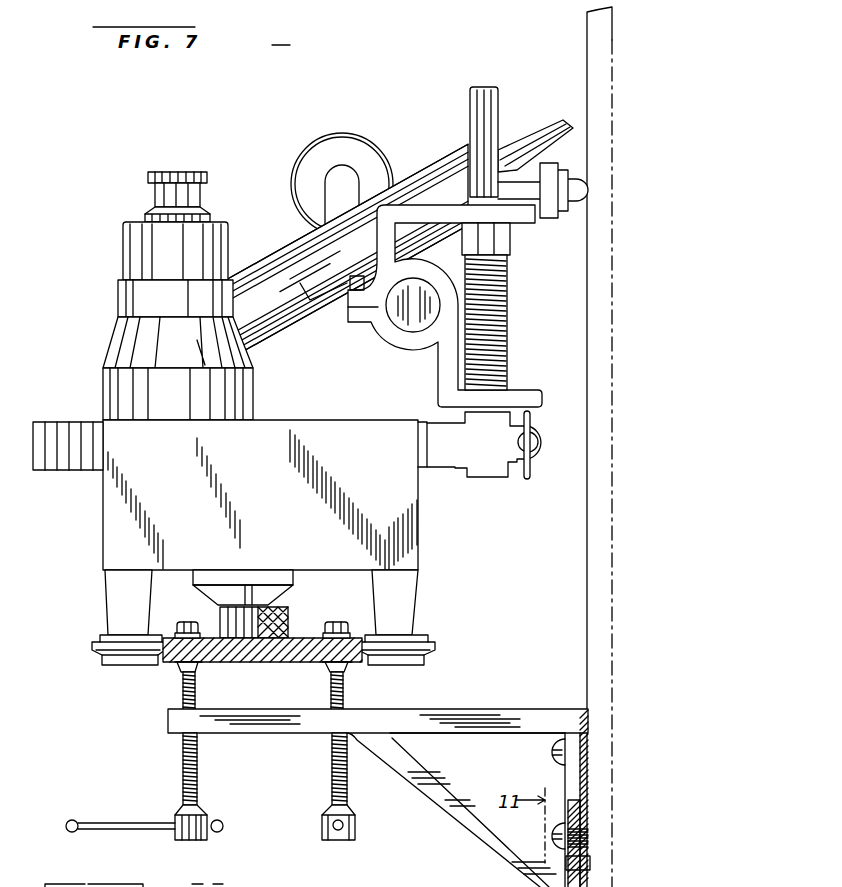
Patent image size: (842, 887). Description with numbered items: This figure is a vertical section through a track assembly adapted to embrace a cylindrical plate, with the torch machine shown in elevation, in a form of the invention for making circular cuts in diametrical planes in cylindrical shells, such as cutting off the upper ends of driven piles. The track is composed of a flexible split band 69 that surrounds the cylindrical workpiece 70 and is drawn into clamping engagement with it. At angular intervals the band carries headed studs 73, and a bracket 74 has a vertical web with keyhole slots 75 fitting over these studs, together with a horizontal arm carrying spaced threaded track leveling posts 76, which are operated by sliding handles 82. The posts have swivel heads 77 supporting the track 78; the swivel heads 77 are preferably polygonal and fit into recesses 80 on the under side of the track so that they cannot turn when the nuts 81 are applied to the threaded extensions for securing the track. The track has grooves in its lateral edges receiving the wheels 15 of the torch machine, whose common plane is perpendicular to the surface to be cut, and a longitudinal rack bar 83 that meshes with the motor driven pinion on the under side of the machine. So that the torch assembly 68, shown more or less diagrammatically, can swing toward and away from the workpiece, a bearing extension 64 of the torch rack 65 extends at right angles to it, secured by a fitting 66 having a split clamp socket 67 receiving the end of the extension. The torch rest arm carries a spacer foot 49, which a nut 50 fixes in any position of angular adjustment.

The wheels 15 is at (97, 636).
The spacer foot 49 is at (569, 178).
The nut 50 is at (510, 299).
The bearing extension 64 is at (481, 125).
The torch rack 65 is at (57, 430).
The fitting 66 is at (455, 464).
The split clamp socket 67 is at (500, 472).
The torch assembly 68 is at (397, 354).
The flexible split band 69 is at (590, 770).
The cylindrical workpiece 70 is at (588, 514).
The headed studs 73 is at (590, 836).
The bracket 74 is at (413, 778).
The keyhole slots 75 is at (590, 862).
The track leveling posts 76 is at (183, 692).
The swivel heads 77 is at (178, 669).
The track 78 is at (299, 645).
The recesses 80 is at (203, 663).
The nuts 81 is at (186, 622).
The sliding handles 82 is at (148, 822).
The rack bar 83 is at (283, 632).